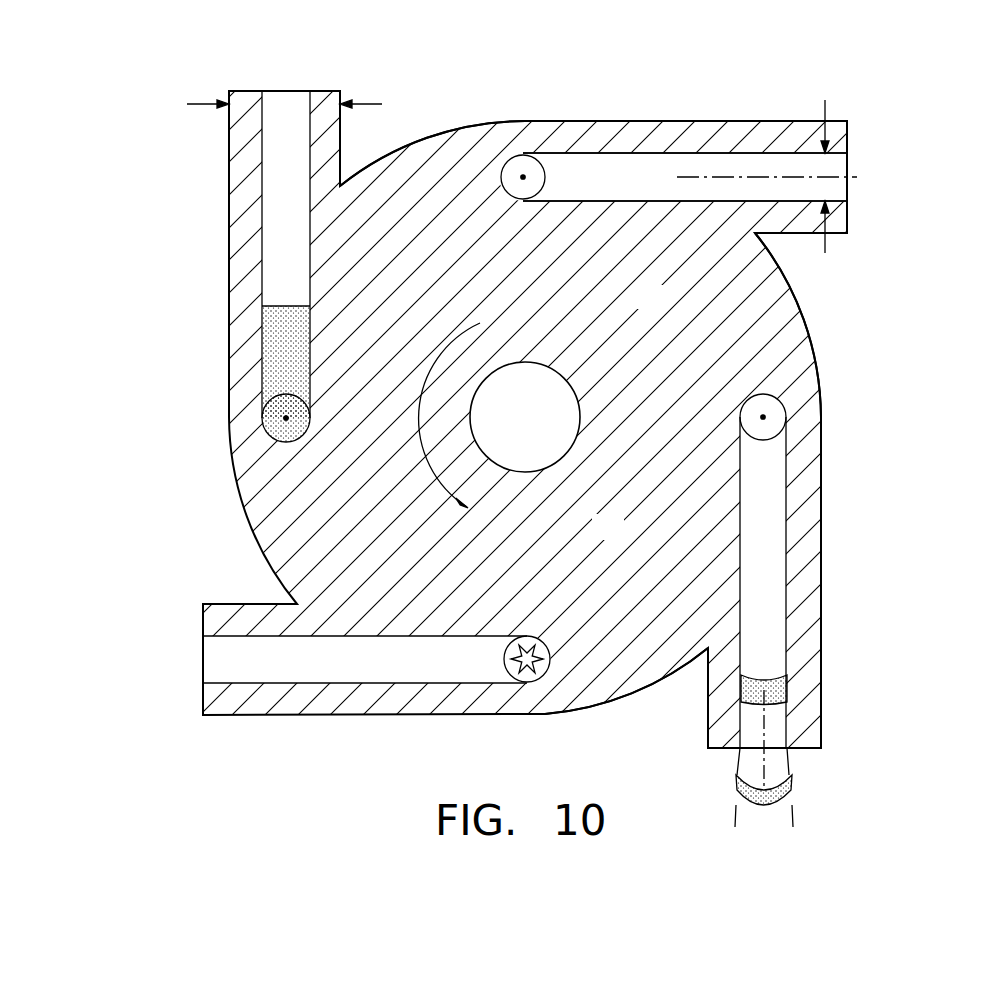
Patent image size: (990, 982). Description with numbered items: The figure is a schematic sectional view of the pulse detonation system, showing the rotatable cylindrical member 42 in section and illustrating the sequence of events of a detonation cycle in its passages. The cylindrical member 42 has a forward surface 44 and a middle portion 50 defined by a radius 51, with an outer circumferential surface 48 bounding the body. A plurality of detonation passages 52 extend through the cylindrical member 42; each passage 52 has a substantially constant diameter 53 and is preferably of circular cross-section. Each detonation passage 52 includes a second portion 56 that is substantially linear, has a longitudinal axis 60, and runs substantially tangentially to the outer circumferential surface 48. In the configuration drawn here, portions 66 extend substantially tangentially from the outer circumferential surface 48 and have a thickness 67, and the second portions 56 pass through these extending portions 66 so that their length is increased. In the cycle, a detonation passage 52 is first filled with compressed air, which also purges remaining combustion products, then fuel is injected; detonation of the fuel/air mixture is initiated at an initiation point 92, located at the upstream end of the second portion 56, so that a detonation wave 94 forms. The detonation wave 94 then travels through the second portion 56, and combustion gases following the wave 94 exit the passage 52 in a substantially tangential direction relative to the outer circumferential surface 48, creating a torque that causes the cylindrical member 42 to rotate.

The rotatable cylindrical member 42 is at (833, 397).
The forward surface 44 is at (622, 537).
The outer circumferential surface 48 is at (418, 140).
The middle portion 50 is at (618, 680).
The radius 51 is at (533, 412).
The detonation passage 52 is at (250, 226).
The diameter 53 is at (826, 243).
The second portion 56 is at (667, 153).
The longitudinal axis 60 is at (857, 175).
The extending portions 66 is at (243, 130).
The thickness 67 is at (193, 103).
The initiation point 92 is at (533, 673).
The detonation wave 94 is at (790, 677).